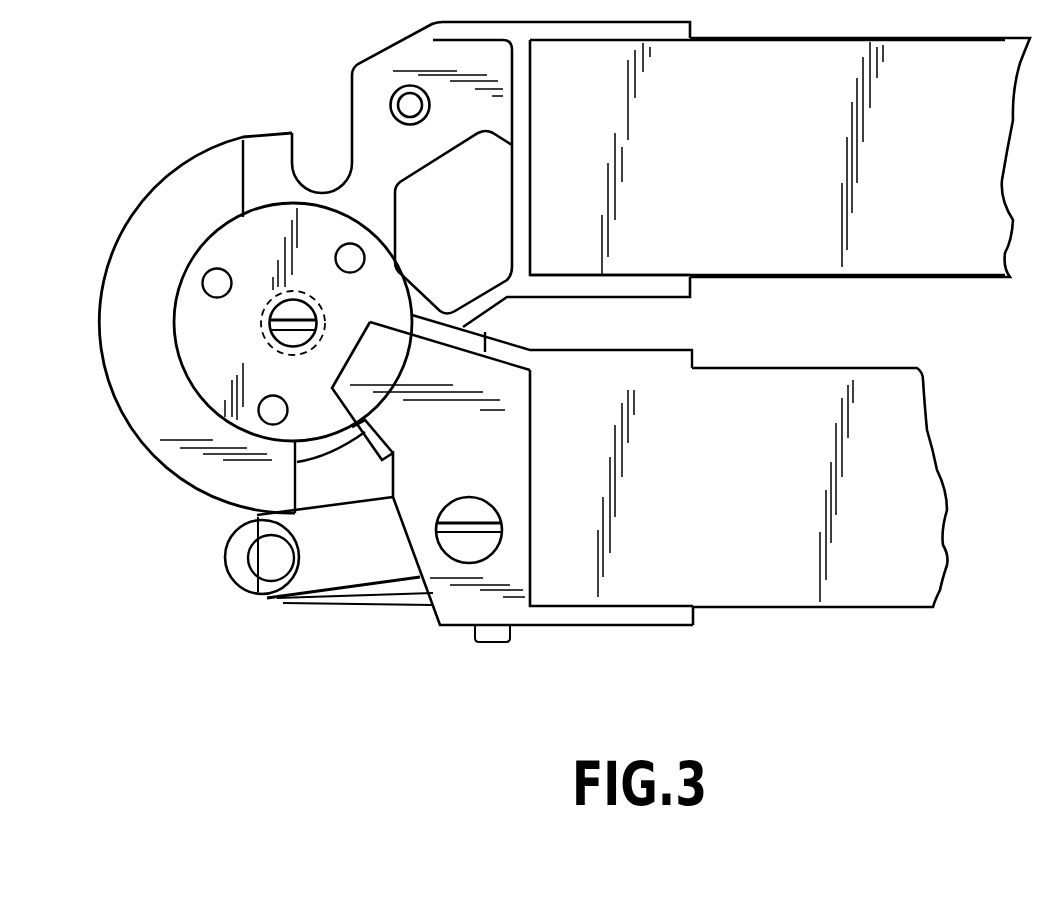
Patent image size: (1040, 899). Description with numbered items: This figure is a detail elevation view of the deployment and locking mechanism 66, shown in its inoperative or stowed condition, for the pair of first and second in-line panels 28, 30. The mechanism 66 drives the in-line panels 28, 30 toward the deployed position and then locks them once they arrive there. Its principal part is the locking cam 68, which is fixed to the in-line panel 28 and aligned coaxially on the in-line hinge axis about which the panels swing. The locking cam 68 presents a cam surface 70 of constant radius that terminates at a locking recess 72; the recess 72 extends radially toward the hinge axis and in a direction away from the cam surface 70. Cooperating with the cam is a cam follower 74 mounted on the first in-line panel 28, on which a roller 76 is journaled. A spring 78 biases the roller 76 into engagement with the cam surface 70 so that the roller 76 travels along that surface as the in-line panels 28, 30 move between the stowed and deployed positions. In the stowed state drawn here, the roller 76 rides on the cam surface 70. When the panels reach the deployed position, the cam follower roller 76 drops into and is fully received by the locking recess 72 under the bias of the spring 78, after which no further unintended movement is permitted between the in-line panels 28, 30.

The deployment and locking mechanism 66 is at (200, 103).
The locking cam 68 is at (162, 427).
The cam surface 70 is at (108, 377).
The locking recess 72 is at (296, 145).
The cam follower 74 is at (312, 565).
The roller 76 is at (240, 547).
The spring 78 is at (385, 603).
The first in-line panel 28 is at (733, 502).
The second in-line panel 30 is at (756, 157).